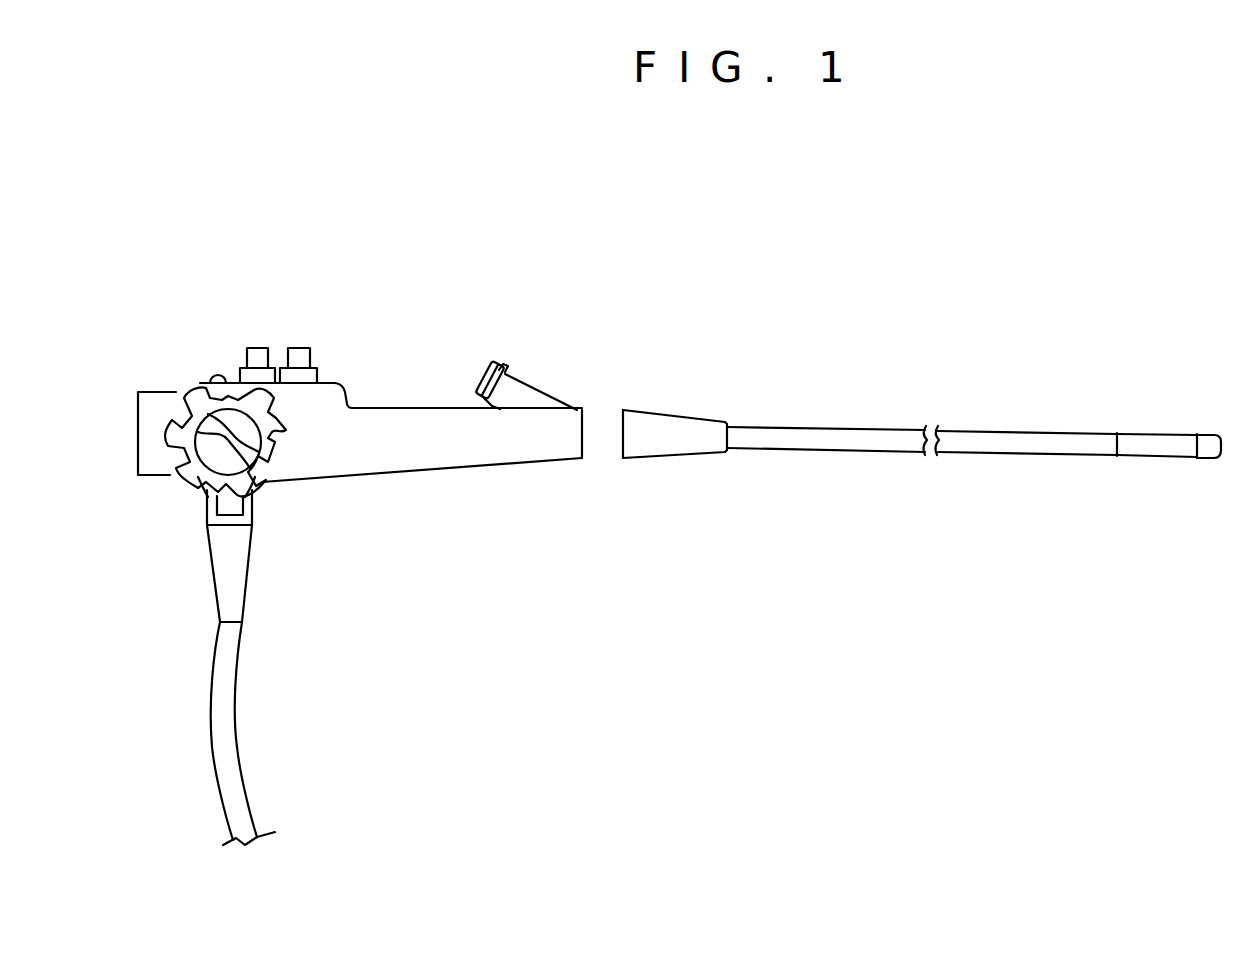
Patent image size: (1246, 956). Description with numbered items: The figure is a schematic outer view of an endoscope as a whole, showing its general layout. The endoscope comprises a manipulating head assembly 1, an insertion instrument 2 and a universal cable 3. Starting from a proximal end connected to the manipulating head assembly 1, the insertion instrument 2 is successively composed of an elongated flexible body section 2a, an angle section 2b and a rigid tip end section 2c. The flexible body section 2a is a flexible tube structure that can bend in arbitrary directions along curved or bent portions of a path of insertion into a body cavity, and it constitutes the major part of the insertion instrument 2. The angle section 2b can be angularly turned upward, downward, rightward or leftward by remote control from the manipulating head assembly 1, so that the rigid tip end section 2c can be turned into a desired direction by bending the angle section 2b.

The manipulating head assembly 1 is at (460, 417).
The insertion instrument 2 is at (976, 405).
The flexible body section 2a is at (1027, 445).
The angle section 2b is at (1158, 450).
The rigid tip end section 2c is at (1208, 435).
The universal cable 3 is at (230, 653).